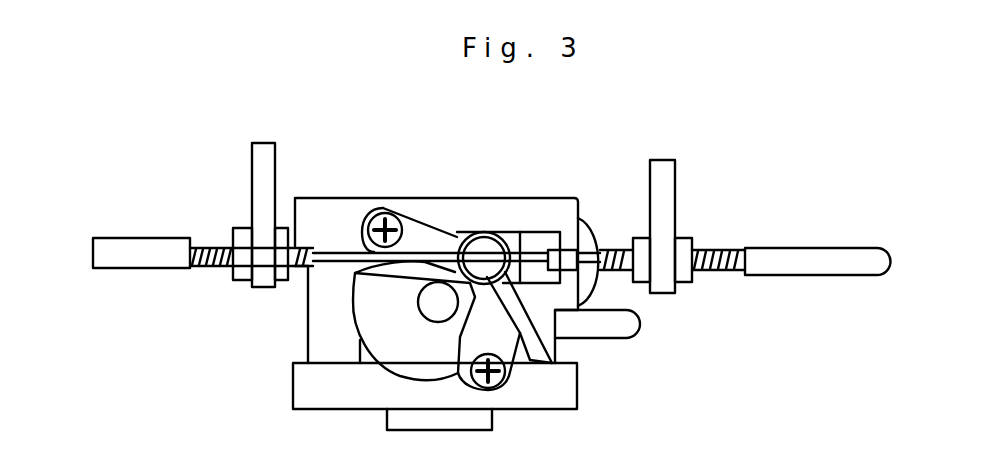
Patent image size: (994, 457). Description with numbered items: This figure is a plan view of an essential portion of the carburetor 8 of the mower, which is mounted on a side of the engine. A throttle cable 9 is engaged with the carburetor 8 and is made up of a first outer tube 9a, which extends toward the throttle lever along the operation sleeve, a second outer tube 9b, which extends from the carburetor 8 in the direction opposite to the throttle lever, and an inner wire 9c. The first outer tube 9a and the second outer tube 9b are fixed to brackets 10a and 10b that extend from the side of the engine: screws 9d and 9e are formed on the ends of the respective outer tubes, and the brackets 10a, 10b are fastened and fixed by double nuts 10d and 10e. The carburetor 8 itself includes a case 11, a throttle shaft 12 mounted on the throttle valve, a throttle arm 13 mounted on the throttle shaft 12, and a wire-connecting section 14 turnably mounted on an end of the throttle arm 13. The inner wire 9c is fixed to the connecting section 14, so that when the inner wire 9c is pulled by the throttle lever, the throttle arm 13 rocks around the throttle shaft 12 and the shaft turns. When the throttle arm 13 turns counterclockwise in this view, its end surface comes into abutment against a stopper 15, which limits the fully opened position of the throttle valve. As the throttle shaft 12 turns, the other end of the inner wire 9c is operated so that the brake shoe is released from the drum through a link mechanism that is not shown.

The carburetor 8 is at (292, 383).
The throttle cable 9 is at (130, 271).
The first outer tube 9a is at (128, 238).
The second outer tube 9b is at (833, 250).
The inner wire 9c is at (343, 247).
The screw 9d is at (203, 270).
The screw 9e is at (628, 248).
The bracket 10a is at (250, 172).
The bracket 10b is at (677, 173).
The double nuts 10d is at (287, 282).
The double nuts 10e is at (640, 283).
The case 11 is at (472, 212).
The throttle shaft 12 is at (412, 302).
The throttle arm 13 is at (510, 372).
The wire-connecting section 14 is at (540, 284).
The stopper 15 is at (560, 313).